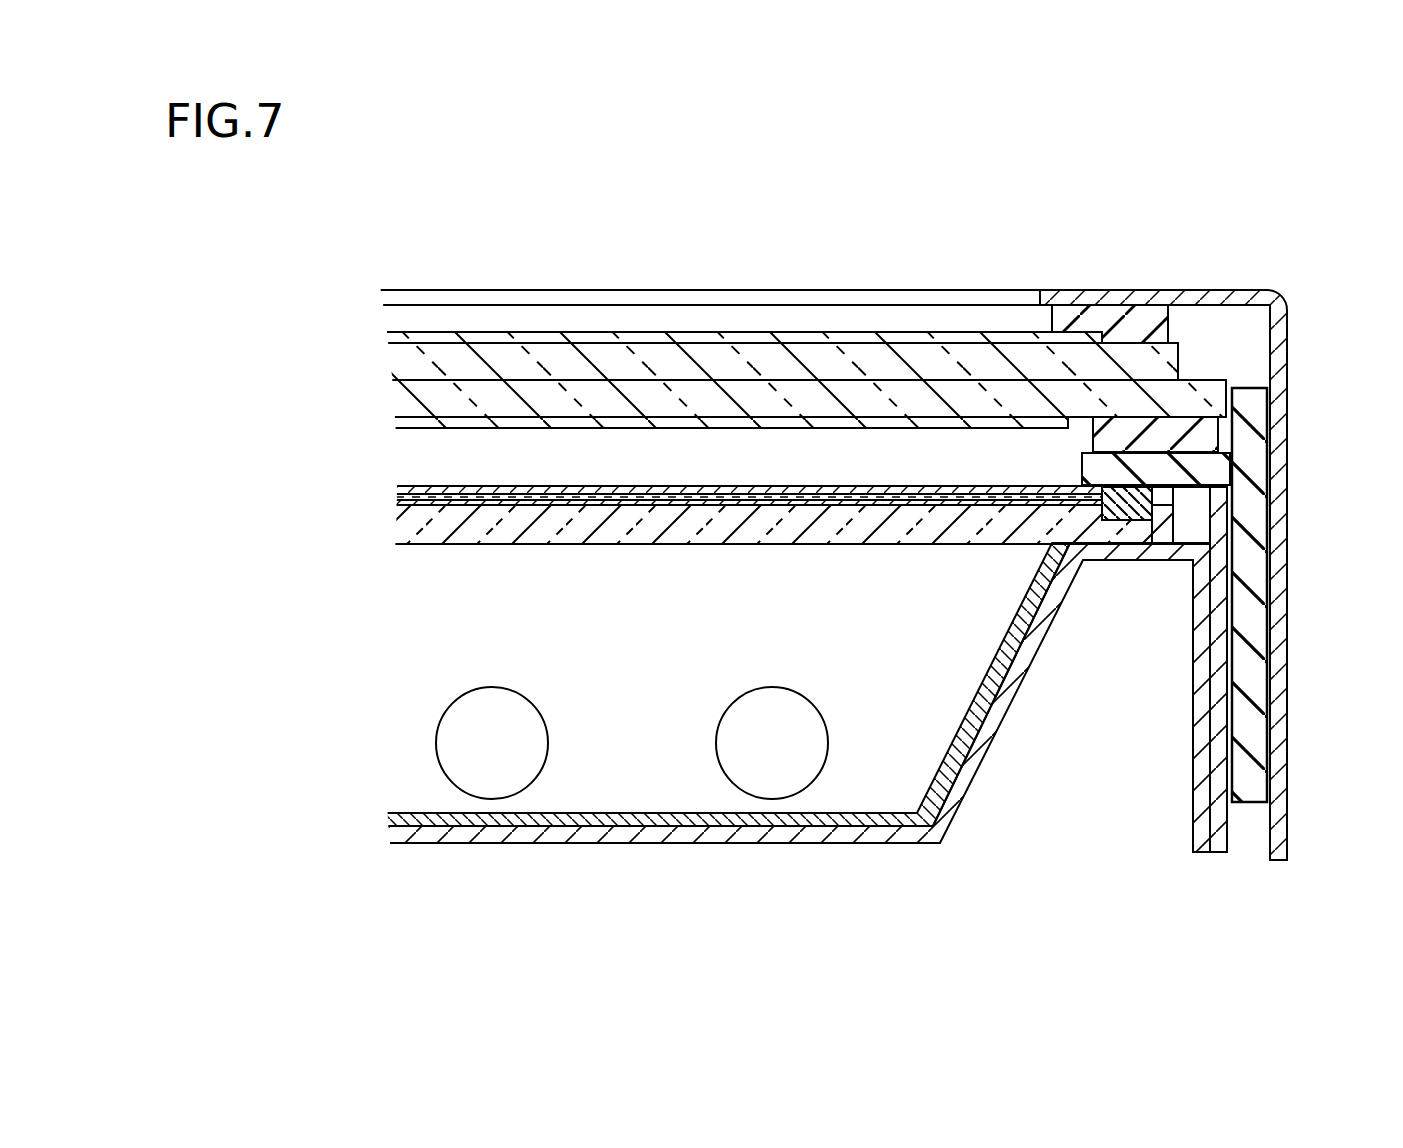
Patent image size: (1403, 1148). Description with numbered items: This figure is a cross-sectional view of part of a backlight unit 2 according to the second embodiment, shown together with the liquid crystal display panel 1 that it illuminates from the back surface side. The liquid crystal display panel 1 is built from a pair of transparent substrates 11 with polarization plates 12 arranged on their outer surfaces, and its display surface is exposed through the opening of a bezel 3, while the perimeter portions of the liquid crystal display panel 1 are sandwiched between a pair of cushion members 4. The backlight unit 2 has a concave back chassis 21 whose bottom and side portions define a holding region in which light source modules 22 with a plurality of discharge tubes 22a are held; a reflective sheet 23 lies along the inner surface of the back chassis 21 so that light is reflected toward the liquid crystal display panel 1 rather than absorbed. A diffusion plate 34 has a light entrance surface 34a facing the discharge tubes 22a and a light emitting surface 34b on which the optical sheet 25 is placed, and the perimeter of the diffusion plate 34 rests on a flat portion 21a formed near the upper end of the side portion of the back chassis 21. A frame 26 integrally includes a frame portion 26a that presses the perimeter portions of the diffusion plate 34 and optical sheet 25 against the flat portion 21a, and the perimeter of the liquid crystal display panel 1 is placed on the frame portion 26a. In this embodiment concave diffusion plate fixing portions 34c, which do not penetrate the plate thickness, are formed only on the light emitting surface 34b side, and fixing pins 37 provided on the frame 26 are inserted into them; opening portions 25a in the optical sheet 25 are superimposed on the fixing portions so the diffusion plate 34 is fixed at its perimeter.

The liquid crystal display panel 1 is at (283, 308).
The backlight unit 2 is at (283, 465).
The bezel 3 is at (1277, 307).
The cushion member 4 is at (1098, 317).
The transparent substrate 11 is at (398, 362).
The polarization plate 12 is at (397, 337).
The back chassis 21 is at (400, 838).
The flat portion 21a is at (1163, 555).
The light source module 22 is at (408, 734).
The discharge tube 22a is at (493, 710).
The reflective sheet 23 is at (400, 820).
The optical sheet 25 is at (405, 490).
The opening portion 25a is at (1122, 487).
The frame 26 is at (1248, 458).
The frame portion 26a is at (1178, 473).
The diffusion plate 34 is at (403, 527).
The light entrance surface 34a is at (573, 544).
The light emitting surface 34b is at (708, 503).
The diffusion plate fixing portion 34c is at (1135, 515).
The fixing pin 37 is at (1113, 512).